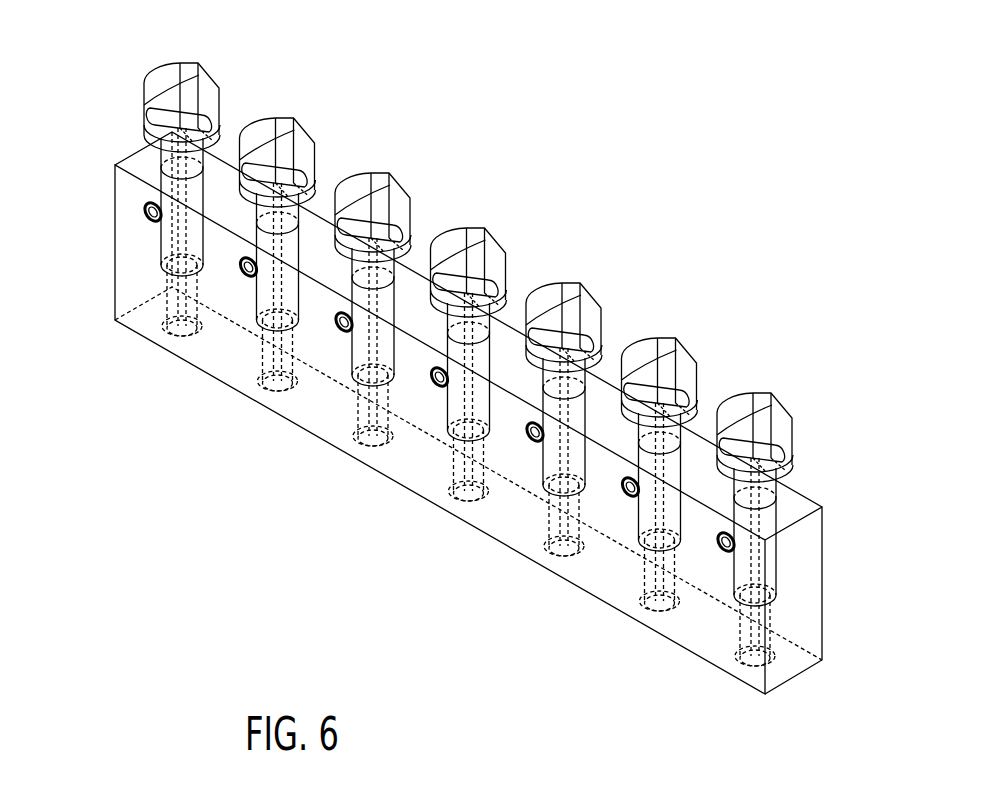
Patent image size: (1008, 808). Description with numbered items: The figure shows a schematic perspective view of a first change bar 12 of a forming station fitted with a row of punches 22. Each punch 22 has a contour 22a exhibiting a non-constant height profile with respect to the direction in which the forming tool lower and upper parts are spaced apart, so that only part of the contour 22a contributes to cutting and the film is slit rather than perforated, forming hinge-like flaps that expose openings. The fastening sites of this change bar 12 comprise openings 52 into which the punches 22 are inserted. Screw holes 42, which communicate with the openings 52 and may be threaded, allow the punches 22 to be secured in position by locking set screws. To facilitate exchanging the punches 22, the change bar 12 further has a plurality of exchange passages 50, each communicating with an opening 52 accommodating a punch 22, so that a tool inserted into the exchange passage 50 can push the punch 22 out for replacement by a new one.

The first change bar 12 is at (732, 342).
The punch 22 is at (468, 338).
The contour 22a is at (304, 145).
The screw hole 42 is at (146, 211).
The exchange passage 50 is at (271, 372).
The opening 52 is at (269, 213).